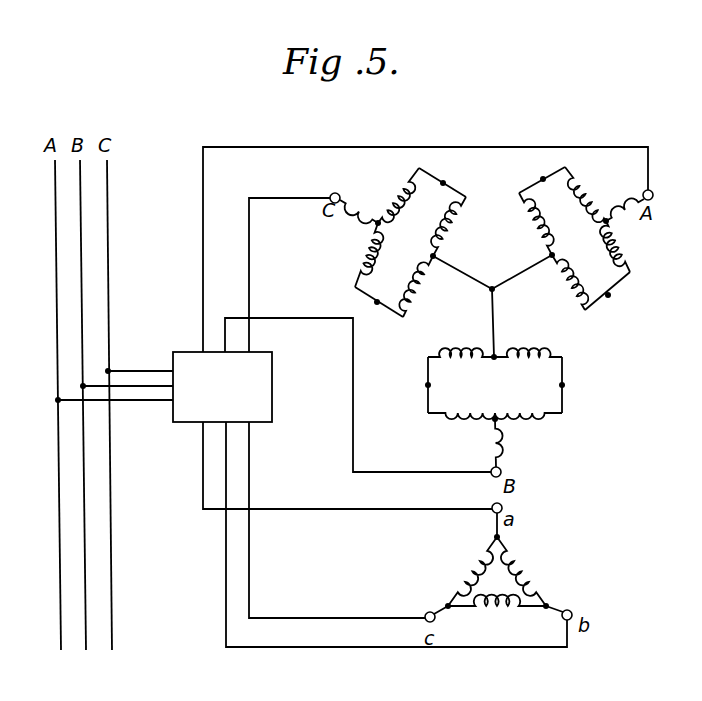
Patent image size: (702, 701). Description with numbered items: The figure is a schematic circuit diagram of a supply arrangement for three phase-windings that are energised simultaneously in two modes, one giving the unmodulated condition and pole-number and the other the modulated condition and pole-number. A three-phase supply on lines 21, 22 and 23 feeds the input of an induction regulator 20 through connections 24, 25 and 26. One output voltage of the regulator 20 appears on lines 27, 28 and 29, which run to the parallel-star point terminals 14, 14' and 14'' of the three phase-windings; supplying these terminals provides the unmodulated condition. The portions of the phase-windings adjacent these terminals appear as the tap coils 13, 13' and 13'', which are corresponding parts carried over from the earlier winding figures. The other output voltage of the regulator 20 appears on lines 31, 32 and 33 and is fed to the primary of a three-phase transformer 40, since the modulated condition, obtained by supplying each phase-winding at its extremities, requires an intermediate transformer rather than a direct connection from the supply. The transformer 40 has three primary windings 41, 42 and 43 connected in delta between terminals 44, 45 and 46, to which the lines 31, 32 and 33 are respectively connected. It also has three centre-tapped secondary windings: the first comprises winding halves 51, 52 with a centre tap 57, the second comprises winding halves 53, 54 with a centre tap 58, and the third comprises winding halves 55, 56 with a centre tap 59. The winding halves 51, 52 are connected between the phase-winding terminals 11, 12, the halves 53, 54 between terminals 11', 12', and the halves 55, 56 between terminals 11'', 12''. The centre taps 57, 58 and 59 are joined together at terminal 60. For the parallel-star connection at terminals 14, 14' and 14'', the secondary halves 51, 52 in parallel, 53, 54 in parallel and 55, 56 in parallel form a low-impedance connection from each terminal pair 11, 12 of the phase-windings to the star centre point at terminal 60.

The phase-winding terminal 11 is at (537, 174).
The phase-winding terminal 11' is at (586, 386).
The phase-winding terminal 11'' is at (379, 313).
The phase-winding terminal 12 is at (614, 299).
The phase-winding terminal 12' is at (409, 386).
The phase-winding terminal 12'' is at (456, 173).
The phase-winding tap 13 is at (613, 219).
The phase-winding tap 13' is at (495, 440).
The phase-winding tap 13'' is at (379, 227).
The parallel-star point terminal 14 is at (663, 187).
The parallel-star point terminal 14' is at (520, 460).
The parallel-star point terminal 14'' is at (335, 180).
The induction regulator 20 is at (272, 393).
The supply line 21 is at (56, 233).
The supply line 22 is at (81, 247).
The supply line 23 is at (109, 242).
The connection 24 is at (146, 360).
The connection 25 is at (130, 388).
The connection 26 is at (165, 402).
The output line 27 is at (203, 333).
The output line 28 is at (222, 328).
The output line 29 is at (250, 333).
The output line 31 is at (203, 468).
The output line 32 is at (226, 488).
The output line 33 is at (250, 468).
The three-phase transformer 40 is at (531, 309).
The primary winding 41 is at (526, 574).
The primary winding 42 is at (498, 612).
The primary winding 43 is at (469, 572).
The primary terminal 44 is at (503, 505).
The primary terminal 45 is at (571, 611).
The primary terminal 46 is at (428, 611).
The secondary winding half 51 is at (526, 234).
The secondary winding half 52 is at (566, 290).
The secondary winding half 53 is at (538, 356).
The secondary winding half 54 is at (463, 356).
The secondary winding half 55 is at (425, 296).
The secondary winding half 56 is at (463, 216).
The centre tap 57 is at (556, 257).
The centre tap 58 is at (494, 360).
The centre tap 59 is at (431, 256).
The star centre point terminal 60 is at (492, 287).